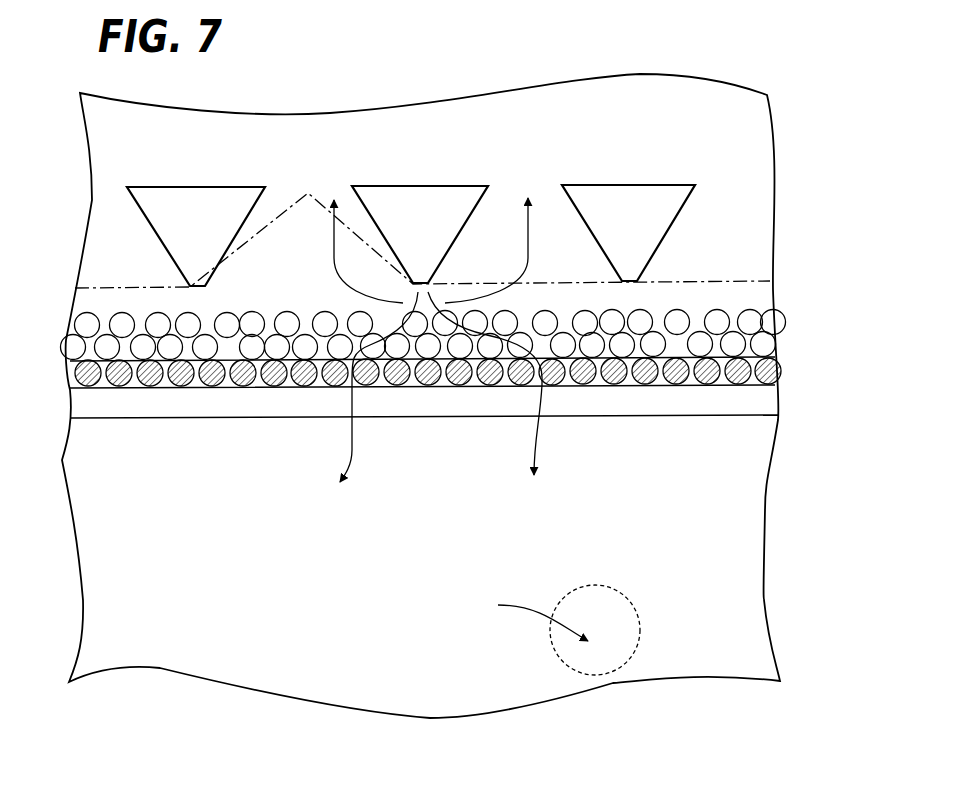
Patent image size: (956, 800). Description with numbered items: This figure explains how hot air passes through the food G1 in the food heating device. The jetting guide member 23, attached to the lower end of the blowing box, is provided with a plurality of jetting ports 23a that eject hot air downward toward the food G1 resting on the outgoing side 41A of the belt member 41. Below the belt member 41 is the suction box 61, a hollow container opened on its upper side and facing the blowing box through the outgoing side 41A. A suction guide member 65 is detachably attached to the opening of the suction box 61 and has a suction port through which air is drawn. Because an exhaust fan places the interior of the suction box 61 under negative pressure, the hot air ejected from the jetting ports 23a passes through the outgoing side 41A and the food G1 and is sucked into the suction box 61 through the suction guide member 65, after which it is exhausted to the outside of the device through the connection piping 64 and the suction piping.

The jetting guide member 23 is at (680, 217).
The jetting ports 23a is at (633, 283).
The food G1 is at (735, 345).
The belt member 41 is at (770, 371).
The outgoing side 41A is at (82, 378).
The suction guide member 65 is at (765, 398).
The suction box 61 is at (752, 512).
The connection piping 64 is at (622, 660).